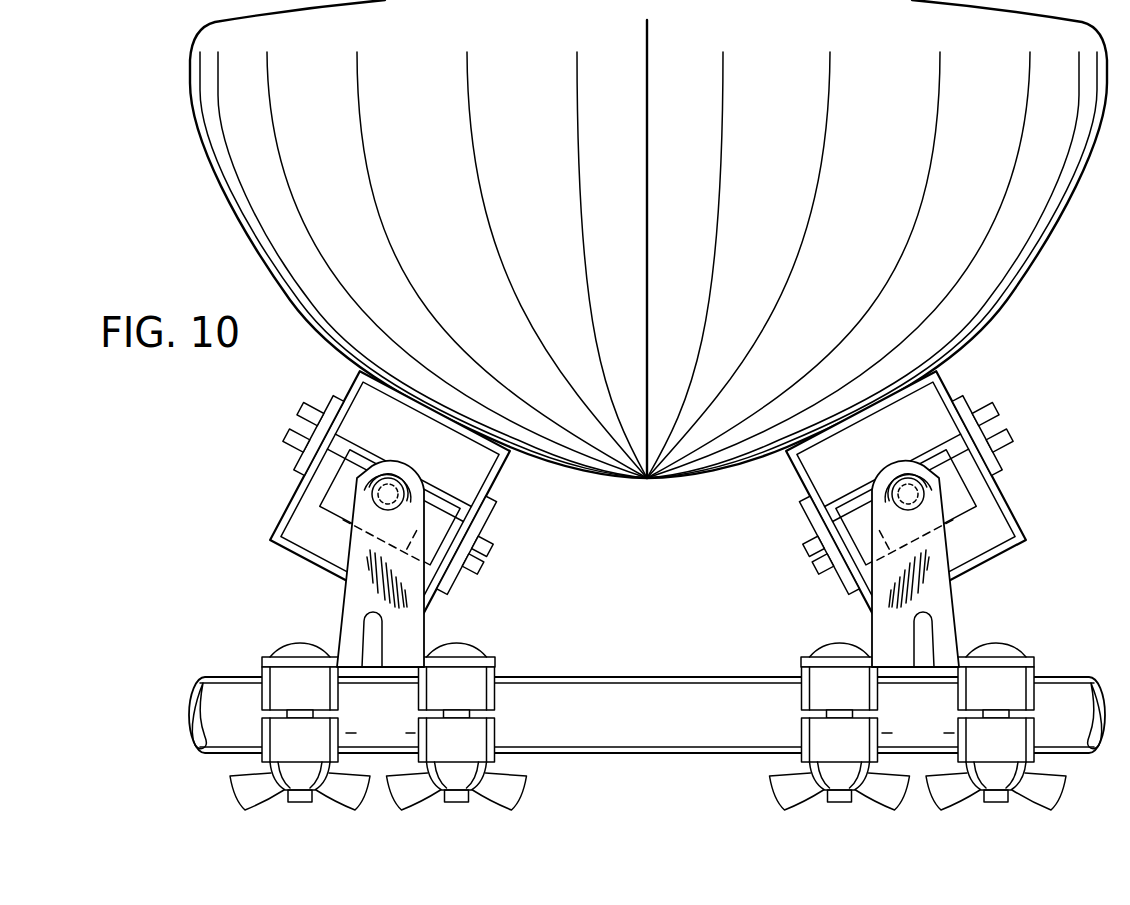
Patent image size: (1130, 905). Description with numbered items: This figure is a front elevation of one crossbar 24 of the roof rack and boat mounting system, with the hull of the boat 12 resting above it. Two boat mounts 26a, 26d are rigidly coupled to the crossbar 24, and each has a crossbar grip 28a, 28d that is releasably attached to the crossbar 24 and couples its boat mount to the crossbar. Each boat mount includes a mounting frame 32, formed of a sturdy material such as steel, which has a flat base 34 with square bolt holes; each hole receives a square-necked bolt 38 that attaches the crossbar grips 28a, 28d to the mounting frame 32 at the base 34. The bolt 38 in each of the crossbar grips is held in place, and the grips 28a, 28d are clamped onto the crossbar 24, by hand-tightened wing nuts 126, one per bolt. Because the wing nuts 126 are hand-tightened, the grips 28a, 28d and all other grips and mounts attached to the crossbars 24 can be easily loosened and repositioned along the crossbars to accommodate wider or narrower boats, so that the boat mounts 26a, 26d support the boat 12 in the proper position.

The boat 12 is at (212, 176).
The crossbar 24 is at (237, 690).
The boat mount 26a is at (250, 507).
The boat mount 26d is at (1037, 515).
The crossbar grip 28a is at (327, 690).
The crossbar grip 28d is at (863, 690).
The mounting frame 32 is at (354, 633).
The base 34 is at (497, 658).
The square-necked bolt 38 is at (288, 643).
The wing nut 126 is at (353, 790).